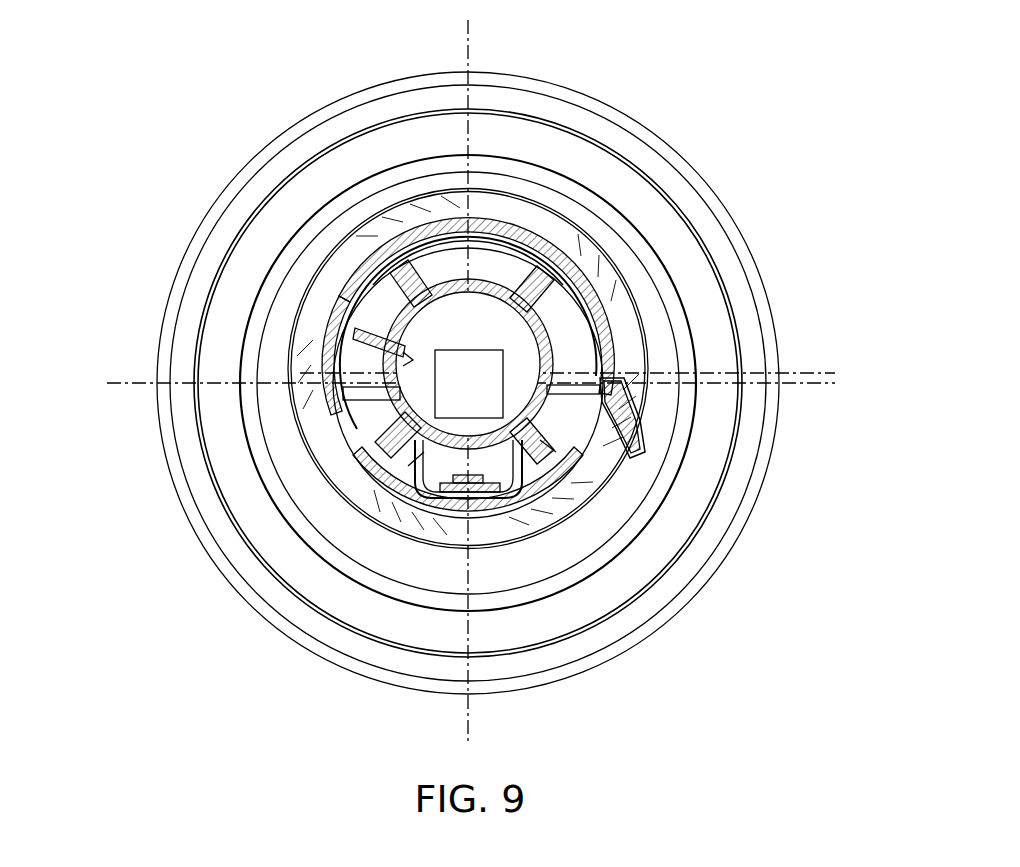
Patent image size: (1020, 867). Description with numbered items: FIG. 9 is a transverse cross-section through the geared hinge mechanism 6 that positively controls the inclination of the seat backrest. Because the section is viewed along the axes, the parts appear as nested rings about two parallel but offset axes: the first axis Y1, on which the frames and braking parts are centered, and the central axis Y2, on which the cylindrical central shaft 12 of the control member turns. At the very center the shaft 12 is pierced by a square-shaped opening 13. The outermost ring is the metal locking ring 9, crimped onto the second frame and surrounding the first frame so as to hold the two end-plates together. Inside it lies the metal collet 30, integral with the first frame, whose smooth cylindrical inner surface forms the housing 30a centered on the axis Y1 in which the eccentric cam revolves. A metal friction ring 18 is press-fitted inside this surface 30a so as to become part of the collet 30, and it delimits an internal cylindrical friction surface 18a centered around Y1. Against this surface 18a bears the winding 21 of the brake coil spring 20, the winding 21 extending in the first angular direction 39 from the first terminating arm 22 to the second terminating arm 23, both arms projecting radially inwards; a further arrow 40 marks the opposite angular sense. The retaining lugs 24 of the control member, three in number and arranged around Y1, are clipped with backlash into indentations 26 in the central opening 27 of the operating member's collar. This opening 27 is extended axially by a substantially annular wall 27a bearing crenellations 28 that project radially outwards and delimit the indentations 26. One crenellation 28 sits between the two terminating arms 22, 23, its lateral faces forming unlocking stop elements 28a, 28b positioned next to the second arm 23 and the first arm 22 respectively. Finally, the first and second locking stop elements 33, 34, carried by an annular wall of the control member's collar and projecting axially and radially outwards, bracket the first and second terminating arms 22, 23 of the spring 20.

The hinge mechanism 6 is at (752, 88).
The locking ring 9 is at (543, 100).
The central shaft 12 is at (517, 345).
The opening 13 is at (505, 368).
The friction ring 18 is at (610, 430).
The friction surface 18a is at (632, 383).
The brake coil spring 20 is at (624, 289).
The winding 21 is at (572, 257).
The first terminating arm 22 is at (521, 462).
The second terminating arm 23 is at (413, 487).
The retaining lugs 24 is at (398, 282).
The indentations 26 is at (381, 268).
The central opening 27 is at (405, 358).
The annular wall 27a is at (345, 400).
The crenellations 28 is at (545, 277).
The unlocking stop element 28a is at (410, 470).
The unlocking stop element 28b is at (560, 445).
The collet 30 is at (336, 472).
The cylindrical housing 30a is at (545, 510).
The first locking stop element 33 is at (540, 444).
The second locking stop element 34 is at (380, 480).
The first angular direction 39 is at (220, 136).
The second rotation direction 40 is at (722, 142).
The first axis Y1 is at (810, 368).
The central axis Y2 is at (812, 387).